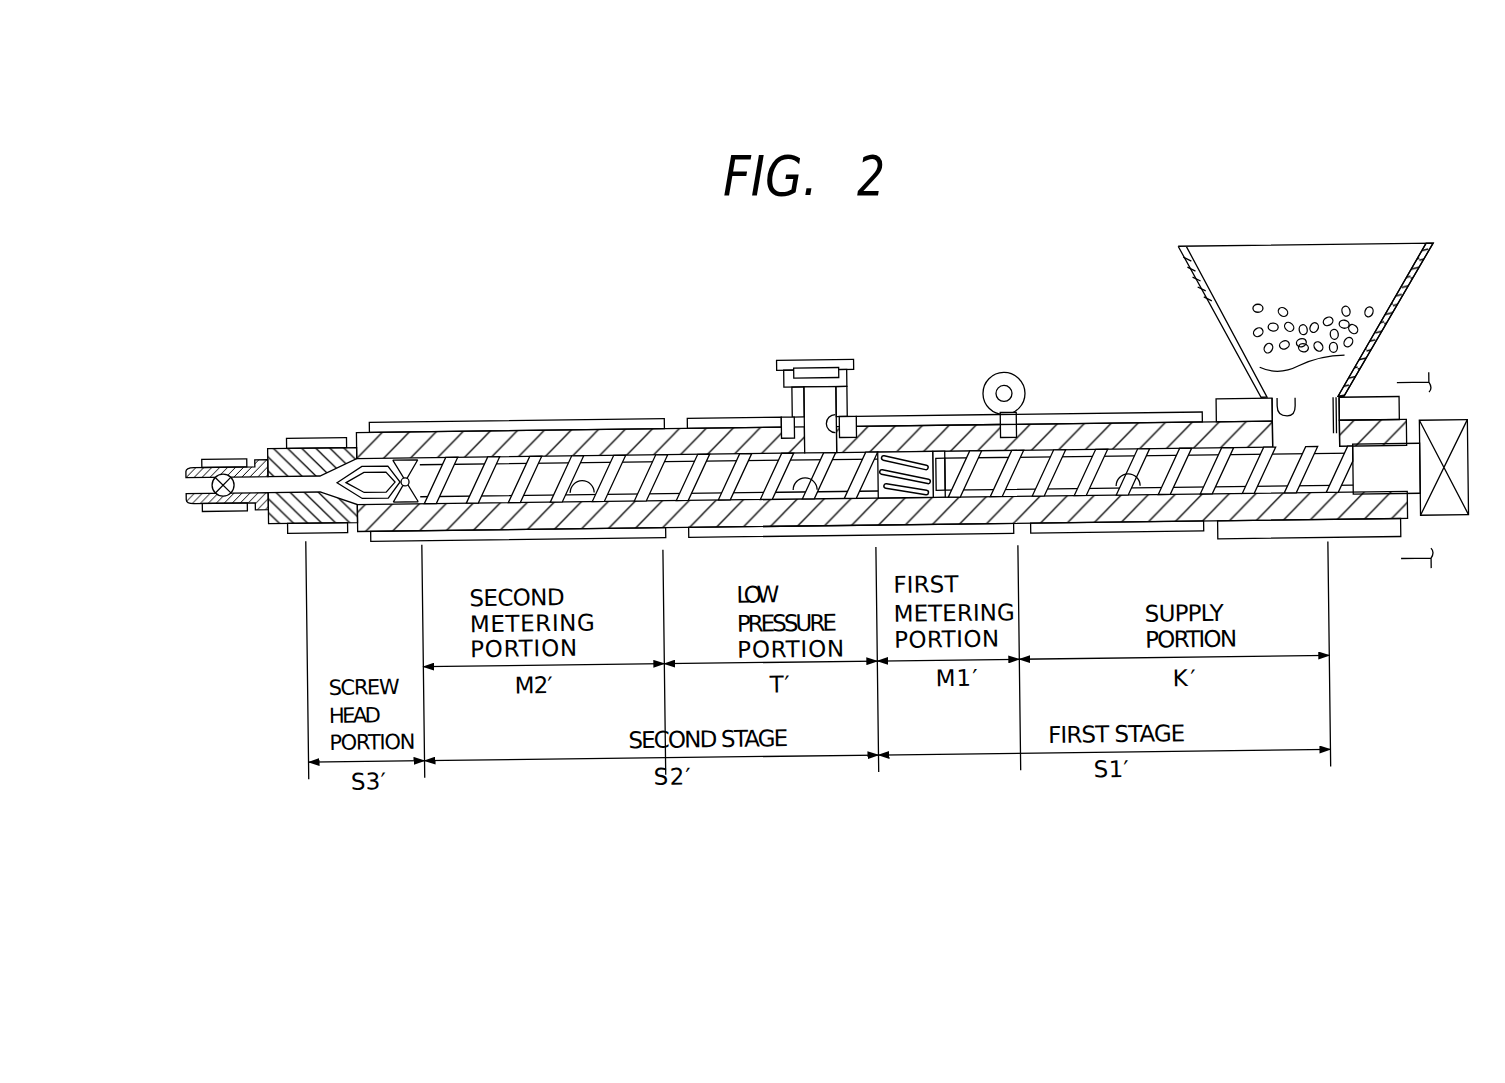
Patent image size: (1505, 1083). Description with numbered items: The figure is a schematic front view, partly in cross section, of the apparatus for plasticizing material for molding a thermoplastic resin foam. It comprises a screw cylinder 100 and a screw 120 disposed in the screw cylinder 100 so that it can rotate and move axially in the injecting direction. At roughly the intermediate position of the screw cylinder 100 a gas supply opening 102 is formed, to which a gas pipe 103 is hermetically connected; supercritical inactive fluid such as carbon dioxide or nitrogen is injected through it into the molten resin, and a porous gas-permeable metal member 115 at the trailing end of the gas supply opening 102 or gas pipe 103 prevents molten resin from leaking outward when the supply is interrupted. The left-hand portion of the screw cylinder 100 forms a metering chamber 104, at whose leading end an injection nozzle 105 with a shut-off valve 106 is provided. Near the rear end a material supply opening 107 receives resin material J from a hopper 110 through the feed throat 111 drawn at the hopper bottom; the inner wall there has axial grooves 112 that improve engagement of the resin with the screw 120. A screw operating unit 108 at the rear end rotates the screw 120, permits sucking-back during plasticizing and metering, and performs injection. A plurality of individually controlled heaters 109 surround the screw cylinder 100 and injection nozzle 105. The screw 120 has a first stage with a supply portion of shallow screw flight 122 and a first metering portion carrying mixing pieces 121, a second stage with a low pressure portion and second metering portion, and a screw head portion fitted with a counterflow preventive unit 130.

The screw cylinder 100 is at (966, 427).
The gas supply opening 102 is at (839, 425).
The gas pipe 103 is at (857, 376).
The metering chamber 104 is at (306, 442).
The injection nozzle 105 is at (196, 454).
The shut-off valve 106 is at (229, 448).
The material supply opening 107 is at (1261, 406).
The screw operating unit 108 is at (1463, 428).
The heaters 109 is at (518, 417).
The hopper 110 is at (1393, 247).
The feed opening 111 is at (1347, 412).
The grooves 112 is at (1349, 522).
The porous gas-permeable metal member 115 is at (820, 360).
The screw 120 is at (626, 453).
The mixing pieces 121 is at (936, 517).
The screw flight 122 is at (584, 502).
The counterflow preventive unit 130 is at (406, 453).
The resin pellets J is at (1292, 321).